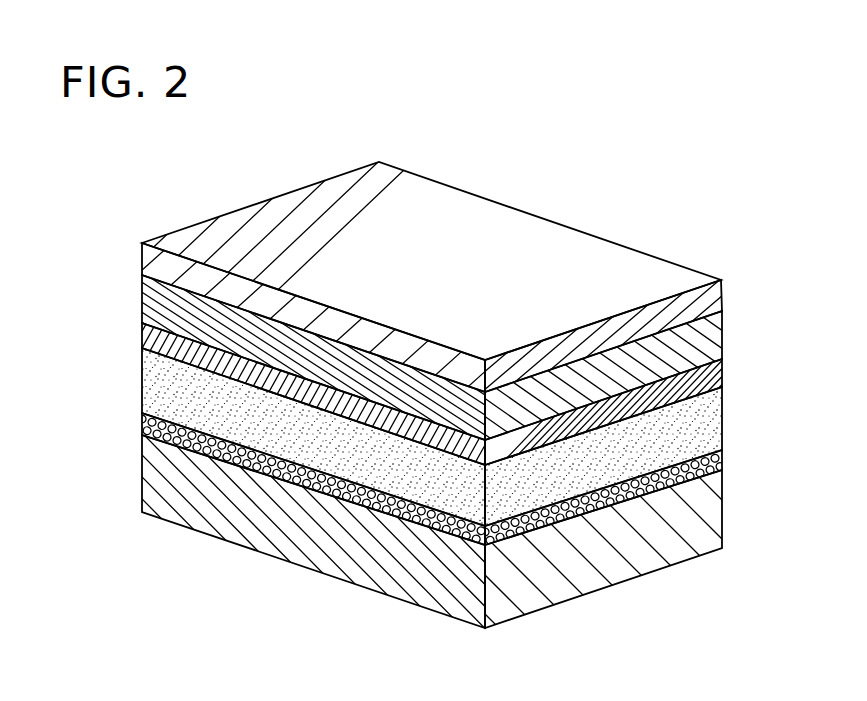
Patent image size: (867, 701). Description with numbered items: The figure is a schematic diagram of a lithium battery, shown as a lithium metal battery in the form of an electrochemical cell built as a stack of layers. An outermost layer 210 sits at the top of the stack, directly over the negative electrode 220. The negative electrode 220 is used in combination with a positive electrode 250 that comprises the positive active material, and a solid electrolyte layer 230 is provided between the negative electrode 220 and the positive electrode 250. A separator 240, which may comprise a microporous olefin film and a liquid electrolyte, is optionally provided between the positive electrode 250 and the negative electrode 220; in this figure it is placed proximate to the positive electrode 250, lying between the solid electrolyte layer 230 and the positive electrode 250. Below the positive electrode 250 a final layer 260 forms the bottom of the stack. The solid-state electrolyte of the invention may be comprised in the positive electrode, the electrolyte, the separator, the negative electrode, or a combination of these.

The first layer (top layer) 210 is at (722, 283).
The negative electrode 220 is at (722, 335).
The solid electrolyte layer 230 is at (722, 373).
The separator 240 is at (722, 417).
The positive electrode 250 is at (722, 457).
The substrate layer 260 is at (722, 542).